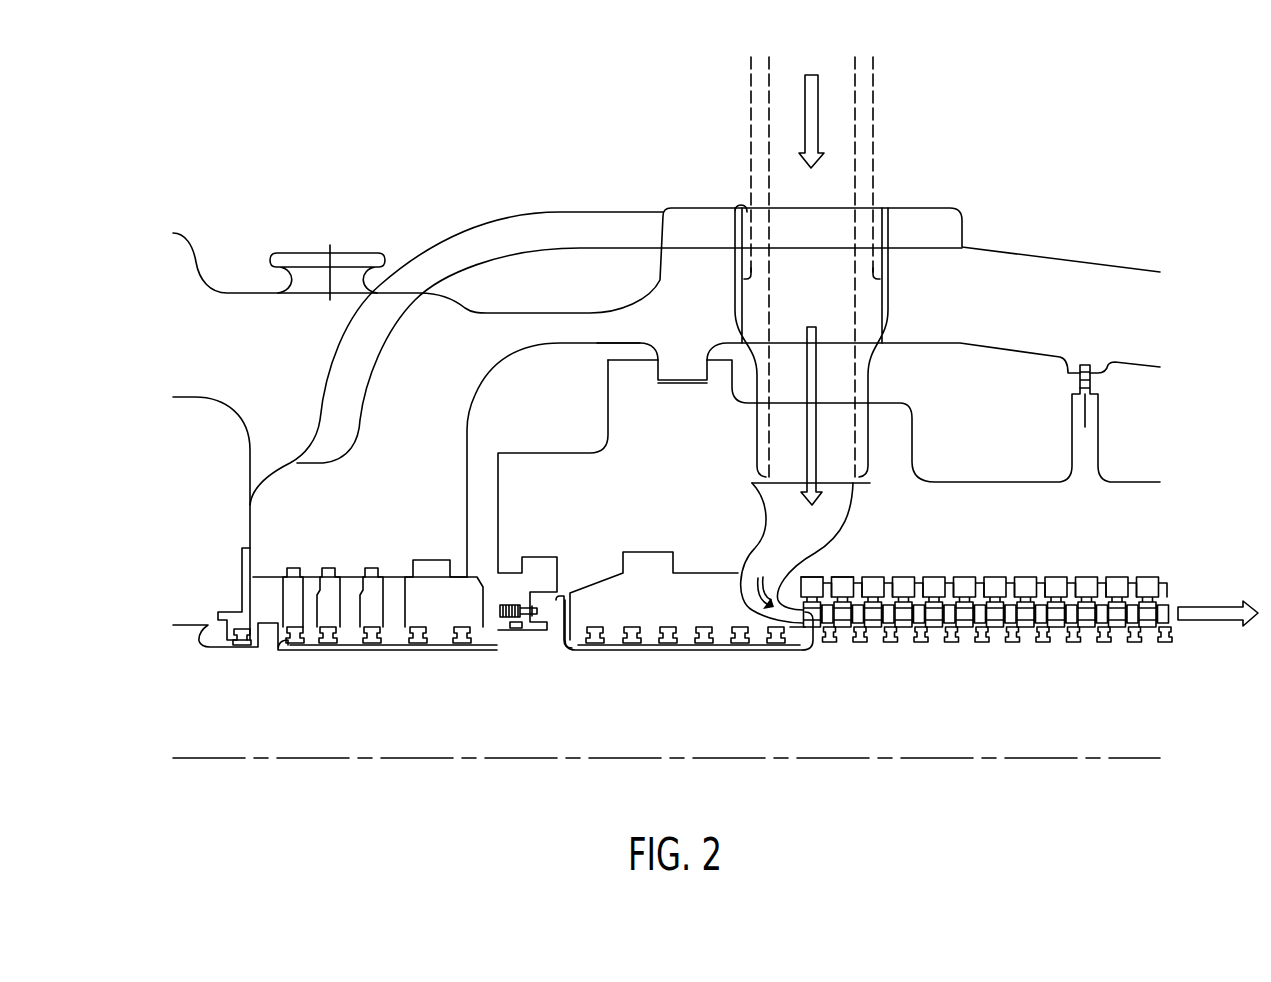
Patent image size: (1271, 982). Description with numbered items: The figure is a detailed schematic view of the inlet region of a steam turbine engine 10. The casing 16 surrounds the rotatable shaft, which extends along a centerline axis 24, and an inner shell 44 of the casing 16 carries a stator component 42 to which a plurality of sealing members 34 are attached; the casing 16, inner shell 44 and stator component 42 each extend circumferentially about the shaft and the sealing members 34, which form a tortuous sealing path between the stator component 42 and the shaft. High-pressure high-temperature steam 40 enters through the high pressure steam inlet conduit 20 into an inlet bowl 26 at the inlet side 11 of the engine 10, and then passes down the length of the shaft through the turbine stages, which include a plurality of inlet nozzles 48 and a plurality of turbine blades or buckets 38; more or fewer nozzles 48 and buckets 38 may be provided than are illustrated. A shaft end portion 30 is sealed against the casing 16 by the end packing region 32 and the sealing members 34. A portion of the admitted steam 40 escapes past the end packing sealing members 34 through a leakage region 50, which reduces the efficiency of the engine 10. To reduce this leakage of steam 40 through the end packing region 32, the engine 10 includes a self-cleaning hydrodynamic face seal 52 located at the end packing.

The steam turbine engine 10 is at (1120, 108).
The inlet side 11 is at (757, 633).
The casing 16 is at (1071, 258).
The high pressure steam inlet conduit 20 is at (880, 203).
The centerline axis 24 is at (793, 758).
The inlet bowl 26 is at (803, 530).
The shaft end portion 30 is at (193, 625).
The end packing region 32 is at (351, 665).
The sealing members 34 is at (690, 668).
The turbine blades or buckets 38 is at (830, 642).
The high-pressure high-temperature steam 40 is at (818, 77).
The stator component 42 is at (668, 606).
The inner shell 44 is at (668, 494).
The inlet nozzles 48 is at (870, 583).
The leakage region 50 is at (535, 662).
The self-cleaning hydrodynamic face seal 52 is at (508, 652).